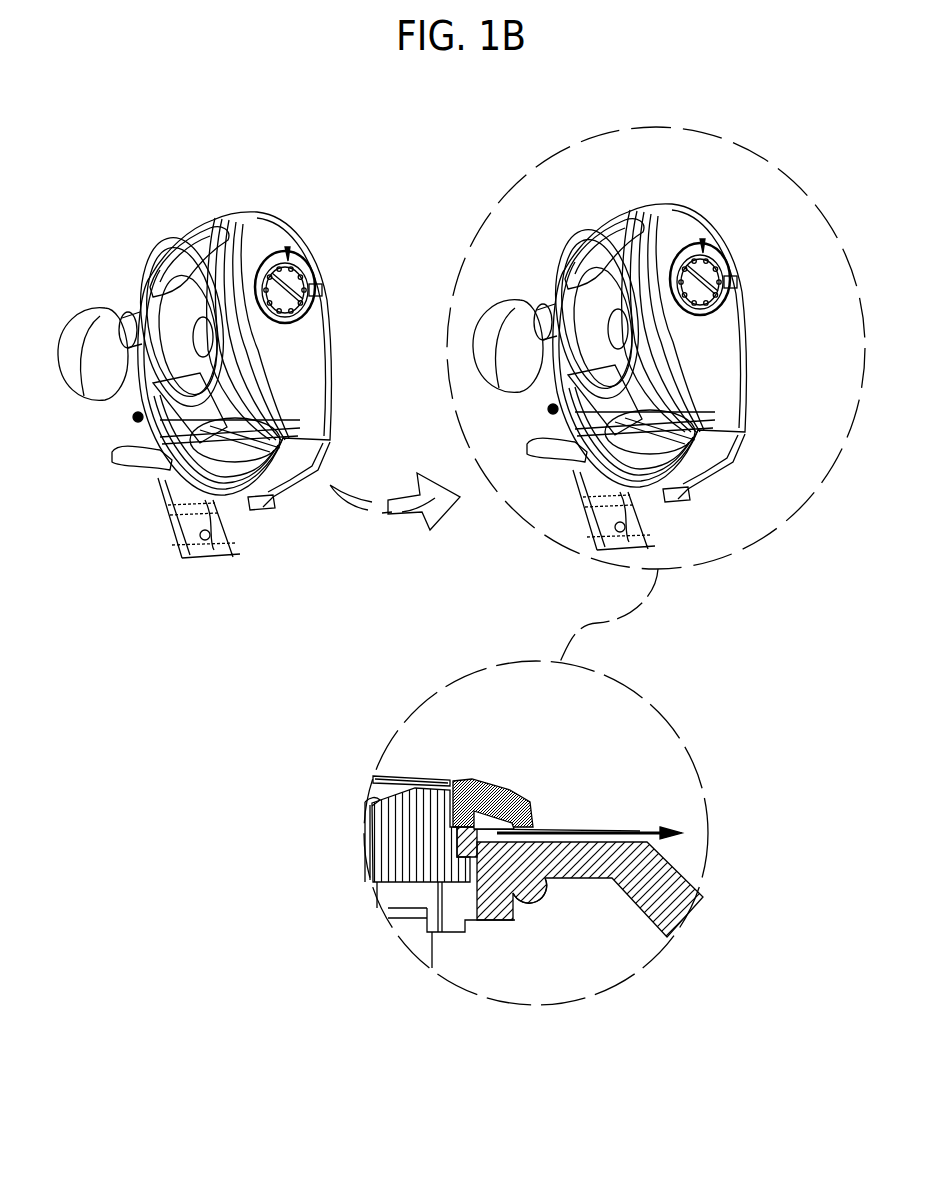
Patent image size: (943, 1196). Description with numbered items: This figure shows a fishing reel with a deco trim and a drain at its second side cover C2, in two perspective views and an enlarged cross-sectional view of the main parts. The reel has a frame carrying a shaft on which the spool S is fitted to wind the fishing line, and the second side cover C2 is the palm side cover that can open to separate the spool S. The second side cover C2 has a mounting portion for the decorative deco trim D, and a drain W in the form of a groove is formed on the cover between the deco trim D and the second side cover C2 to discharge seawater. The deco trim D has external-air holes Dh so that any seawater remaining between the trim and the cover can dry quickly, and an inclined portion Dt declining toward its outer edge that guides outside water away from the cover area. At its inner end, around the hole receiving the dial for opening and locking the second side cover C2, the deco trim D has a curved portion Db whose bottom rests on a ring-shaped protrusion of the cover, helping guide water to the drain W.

The spool S is at (175, 318).
The deco trim D is at (288, 248).
The external-air hole Dh is at (310, 282).
The drain W is at (323, 290).
The second side cover C2 is at (303, 347).
The curved portion Db is at (448, 790).
The inclined portion Dt is at (477, 790).